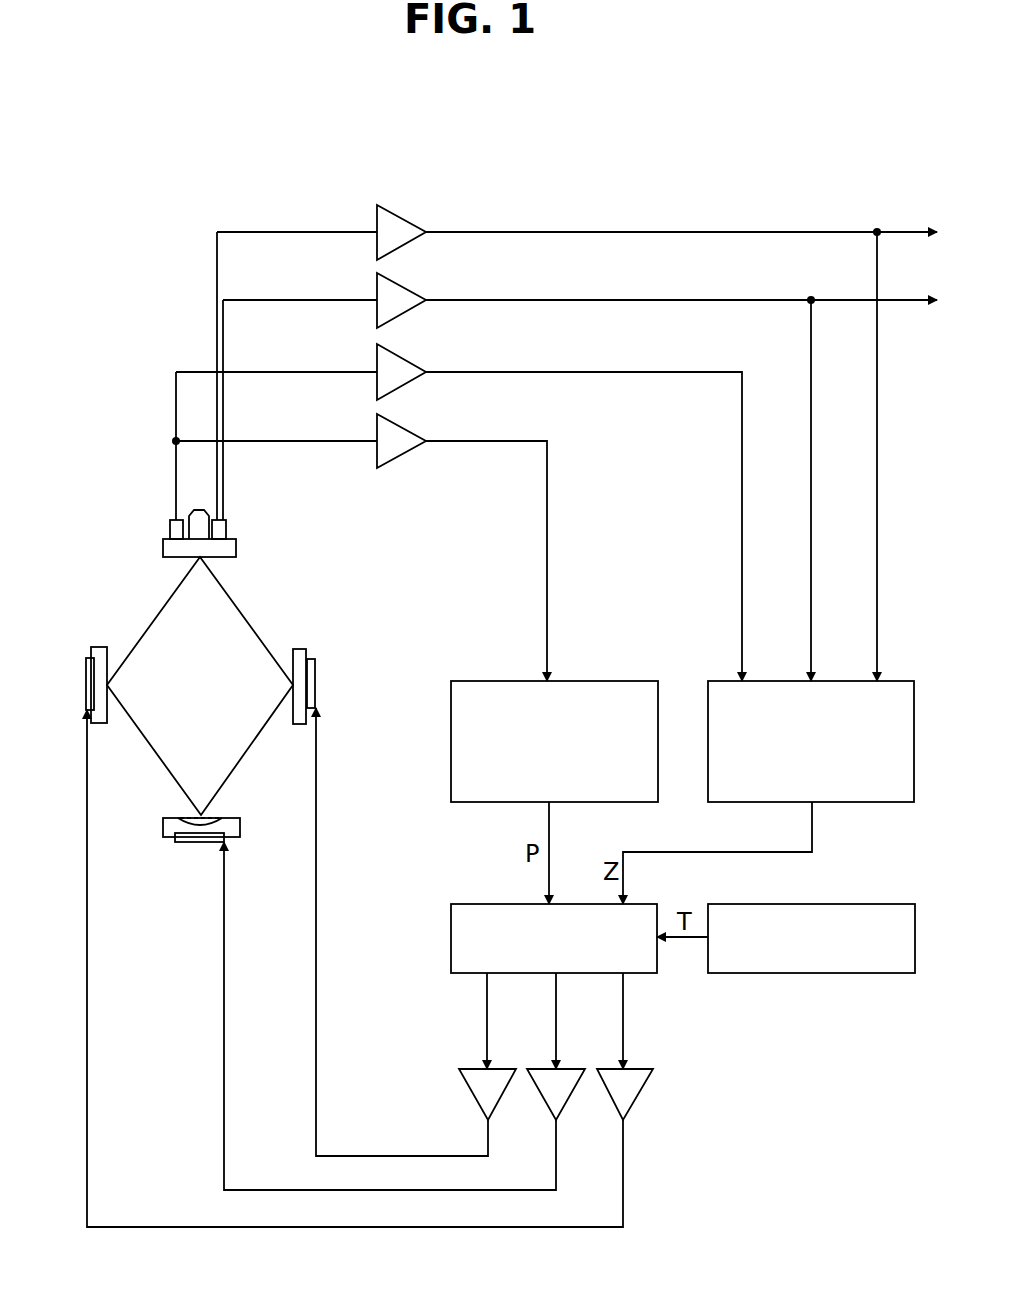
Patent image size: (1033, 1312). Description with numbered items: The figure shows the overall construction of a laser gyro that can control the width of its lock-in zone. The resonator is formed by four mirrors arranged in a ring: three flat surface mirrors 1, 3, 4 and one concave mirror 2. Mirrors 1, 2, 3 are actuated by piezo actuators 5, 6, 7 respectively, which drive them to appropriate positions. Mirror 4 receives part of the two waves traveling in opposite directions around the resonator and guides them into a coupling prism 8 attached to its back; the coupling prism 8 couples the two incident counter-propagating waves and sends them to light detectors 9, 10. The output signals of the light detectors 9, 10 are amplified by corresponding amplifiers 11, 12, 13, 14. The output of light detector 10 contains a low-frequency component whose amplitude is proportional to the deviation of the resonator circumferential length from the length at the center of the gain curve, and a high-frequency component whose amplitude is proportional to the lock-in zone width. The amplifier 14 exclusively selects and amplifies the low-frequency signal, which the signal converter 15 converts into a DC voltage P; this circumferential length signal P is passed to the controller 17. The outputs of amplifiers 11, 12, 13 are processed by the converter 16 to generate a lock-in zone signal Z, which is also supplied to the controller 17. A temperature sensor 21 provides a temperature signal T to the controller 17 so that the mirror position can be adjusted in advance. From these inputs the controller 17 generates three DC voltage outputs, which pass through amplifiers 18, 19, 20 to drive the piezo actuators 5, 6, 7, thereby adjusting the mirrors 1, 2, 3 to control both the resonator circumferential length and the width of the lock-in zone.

The flat surface mirror 1 is at (75, 659).
The concave mirror 2 is at (176, 831).
The flat surface mirror 3 is at (324, 660).
The flat surface mirror 4 is at (174, 530).
The piezo actuator 5 is at (63, 684).
The piezo actuator 6 is at (184, 850).
The piezo actuator 7 is at (338, 675).
The coupling prism 8 is at (200, 501).
The light detector 9 is at (245, 506).
The light detector 10 is at (149, 504).
The amplifier 11 is at (577, 216).
The amplifier 12 is at (580, 284).
The amplifier 13 is at (459, 497).
The amplifier 14 is at (359, 531).
The signal converter 15 is at (555, 716).
The converter 16 is at (792, 716).
The controller 17 is at (538, 913).
The amplifier 18 is at (416, 932).
The amplifier 19 is at (404, 1016).
The amplifier 20 is at (370, 968).
The temperature sensor 21 is at (811, 956).